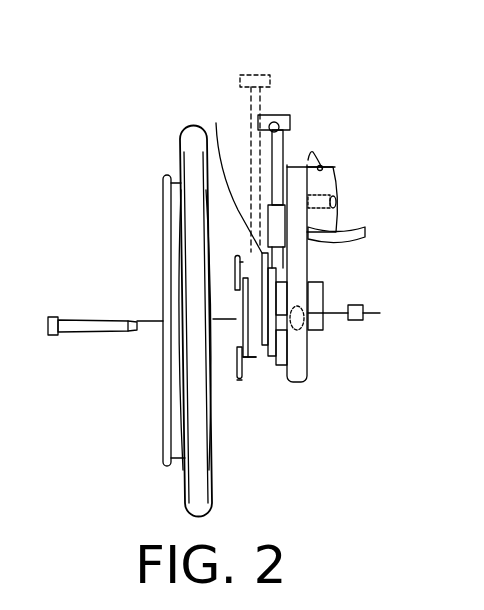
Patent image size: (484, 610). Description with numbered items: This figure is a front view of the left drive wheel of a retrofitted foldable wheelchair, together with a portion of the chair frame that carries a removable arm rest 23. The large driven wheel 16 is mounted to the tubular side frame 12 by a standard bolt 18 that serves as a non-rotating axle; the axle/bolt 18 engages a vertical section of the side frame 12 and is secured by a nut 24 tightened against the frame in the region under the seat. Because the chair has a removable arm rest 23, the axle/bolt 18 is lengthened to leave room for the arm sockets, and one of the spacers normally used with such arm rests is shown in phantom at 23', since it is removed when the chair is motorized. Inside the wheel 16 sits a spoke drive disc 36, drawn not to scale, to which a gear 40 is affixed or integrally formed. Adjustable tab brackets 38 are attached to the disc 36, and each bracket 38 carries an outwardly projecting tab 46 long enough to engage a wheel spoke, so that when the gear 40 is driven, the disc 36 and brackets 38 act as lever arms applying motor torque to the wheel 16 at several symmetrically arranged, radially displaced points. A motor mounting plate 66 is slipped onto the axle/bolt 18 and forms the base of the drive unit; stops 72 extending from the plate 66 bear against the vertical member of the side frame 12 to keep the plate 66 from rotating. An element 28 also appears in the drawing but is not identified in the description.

The side frame 12 is at (293, 173).
The driven wheel 16 is at (181, 135).
The axle/bolt 18 is at (84, 320).
The removable arm rest 23 is at (303, 165).
The spacer 23' is at (289, 139).
The nut 24 is at (358, 320).
The bearing block 28 is at (323, 298).
The spoke drive disc 36 is at (245, 341).
The adjustable tab bracket 38 is at (243, 370).
The gear 40 is at (243, 362).
The tab projection 46 is at (240, 380).
The motor mounting plate 66 is at (233, 220).
The stop 72 is at (305, 258).